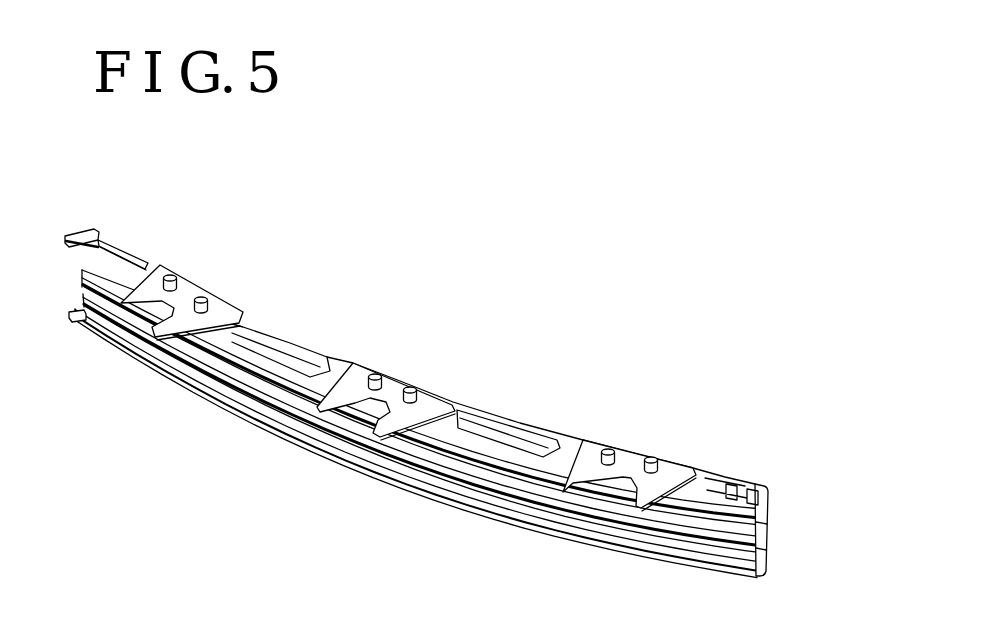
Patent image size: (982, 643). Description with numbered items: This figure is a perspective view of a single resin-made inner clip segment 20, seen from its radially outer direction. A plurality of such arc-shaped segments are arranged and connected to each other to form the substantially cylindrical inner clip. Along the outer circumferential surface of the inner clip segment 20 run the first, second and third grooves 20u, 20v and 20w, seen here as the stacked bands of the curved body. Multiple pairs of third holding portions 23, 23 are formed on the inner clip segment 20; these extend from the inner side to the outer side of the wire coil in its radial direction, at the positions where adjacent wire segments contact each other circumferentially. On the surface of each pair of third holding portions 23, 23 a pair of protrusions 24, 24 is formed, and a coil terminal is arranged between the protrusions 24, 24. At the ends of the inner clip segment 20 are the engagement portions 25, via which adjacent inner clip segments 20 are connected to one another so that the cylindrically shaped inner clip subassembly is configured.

The inner clip segment 20 is at (456, 385).
The first groove 20u is at (763, 511).
The second groove 20v is at (764, 537).
The third groove 20w is at (756, 562).
The third holding portion 23 is at (563, 493).
The protrusion 24 is at (609, 448).
The engagement portion 25 is at (103, 239).